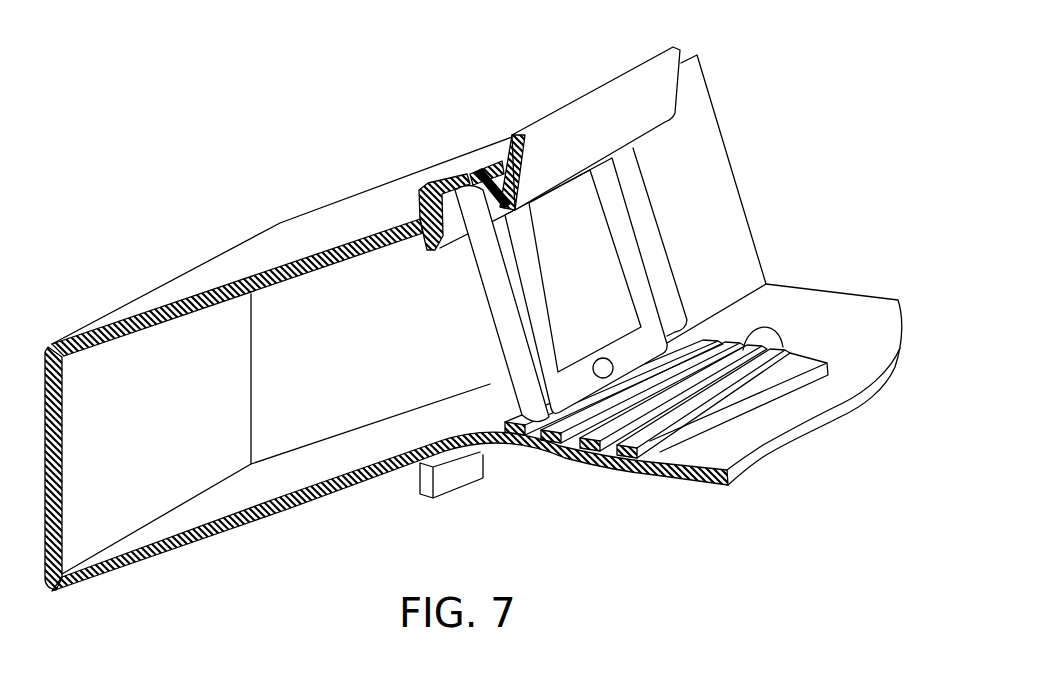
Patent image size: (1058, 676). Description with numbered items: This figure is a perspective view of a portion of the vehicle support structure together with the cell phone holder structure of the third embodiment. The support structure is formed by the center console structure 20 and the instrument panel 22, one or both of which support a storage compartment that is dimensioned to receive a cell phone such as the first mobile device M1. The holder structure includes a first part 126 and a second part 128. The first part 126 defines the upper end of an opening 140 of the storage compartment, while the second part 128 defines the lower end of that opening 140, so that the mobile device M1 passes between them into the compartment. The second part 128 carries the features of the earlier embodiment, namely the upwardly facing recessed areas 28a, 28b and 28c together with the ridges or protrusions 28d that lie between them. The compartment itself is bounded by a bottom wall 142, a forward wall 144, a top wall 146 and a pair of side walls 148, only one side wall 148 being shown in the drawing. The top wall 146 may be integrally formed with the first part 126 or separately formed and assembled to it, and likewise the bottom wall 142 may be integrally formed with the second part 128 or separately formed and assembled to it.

The center console structure 20 is at (863, 320).
The instrument panel 22 is at (696, 157).
The upwardly facing recessed area 28a is at (528, 428).
The upwardly facing recessed area 28b is at (570, 432).
The upwardly facing recessed area 28c is at (603, 436).
The ridges or protrusions 28d is at (712, 337).
The first part 126 is at (576, 96).
The second part 128 is at (751, 427).
The opening 140 is at (657, 262).
The bottom wall 142 is at (384, 438).
The forward wall 144 is at (205, 376).
The top wall 146 is at (328, 268).
The side wall 148 is at (314, 414).
The first mobile device M1 is at (584, 238).